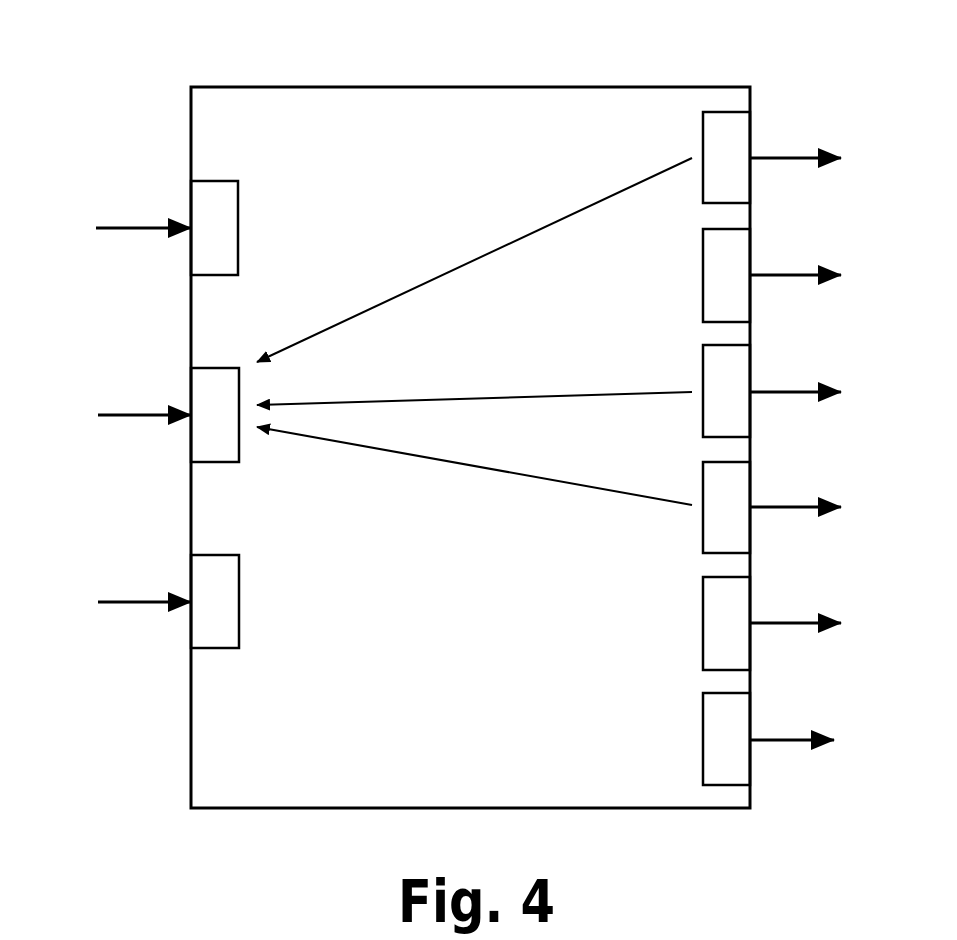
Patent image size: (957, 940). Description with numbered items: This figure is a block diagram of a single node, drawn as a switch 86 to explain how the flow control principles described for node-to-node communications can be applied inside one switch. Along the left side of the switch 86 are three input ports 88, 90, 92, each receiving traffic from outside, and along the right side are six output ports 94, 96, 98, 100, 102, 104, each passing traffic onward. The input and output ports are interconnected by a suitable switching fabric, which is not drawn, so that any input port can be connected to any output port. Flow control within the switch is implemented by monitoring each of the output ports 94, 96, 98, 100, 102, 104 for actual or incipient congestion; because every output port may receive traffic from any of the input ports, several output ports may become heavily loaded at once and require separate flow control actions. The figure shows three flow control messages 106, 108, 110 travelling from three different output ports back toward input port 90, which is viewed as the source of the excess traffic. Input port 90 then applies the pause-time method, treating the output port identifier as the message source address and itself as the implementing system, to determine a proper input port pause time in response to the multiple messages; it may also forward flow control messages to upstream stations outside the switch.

The switch fabric / processing block 86 is at (468, 87).
The input port 88 is at (190, 190).
The input port 90 is at (192, 378).
The input port 92 is at (192, 565).
The output port 94 is at (752, 120).
The output port 96 is at (752, 238).
The output port 98 is at (752, 353).
The output port 100 is at (752, 472).
The output port 102 is at (752, 585).
The output port 104 is at (752, 703).
The flow control message 106 is at (540, 228).
The flow control message 108 is at (612, 392).
The flow control message 110 is at (567, 483).